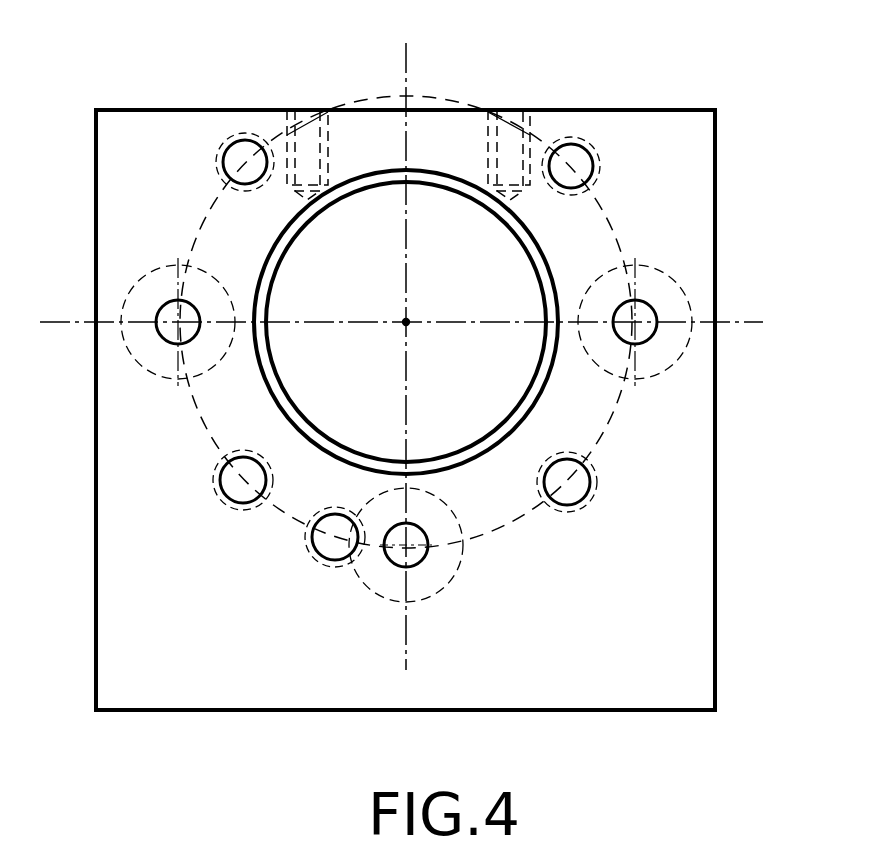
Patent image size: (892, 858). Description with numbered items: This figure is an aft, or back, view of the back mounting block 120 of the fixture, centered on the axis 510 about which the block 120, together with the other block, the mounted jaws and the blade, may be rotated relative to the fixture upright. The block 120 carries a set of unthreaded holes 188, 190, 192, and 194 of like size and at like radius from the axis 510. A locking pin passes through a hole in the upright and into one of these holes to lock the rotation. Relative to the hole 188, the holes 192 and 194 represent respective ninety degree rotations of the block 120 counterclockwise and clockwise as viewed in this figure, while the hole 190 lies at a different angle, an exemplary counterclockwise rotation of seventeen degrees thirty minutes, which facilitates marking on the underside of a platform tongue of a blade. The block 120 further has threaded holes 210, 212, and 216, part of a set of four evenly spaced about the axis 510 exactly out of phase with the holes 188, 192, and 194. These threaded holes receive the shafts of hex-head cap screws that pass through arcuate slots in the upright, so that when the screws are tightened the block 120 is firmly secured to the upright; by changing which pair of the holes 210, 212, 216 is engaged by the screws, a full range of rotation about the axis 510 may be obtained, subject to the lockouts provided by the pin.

The block 120 is at (655, 623).
The axis 510 is at (408, 325).
The hole 216 is at (243, 140).
The hole 210 is at (575, 147).
The hole 192 is at (162, 328).
The hole 194 is at (638, 326).
The hole 190 is at (322, 547).
The hole 188 is at (410, 560).
The hole 212 is at (575, 497).